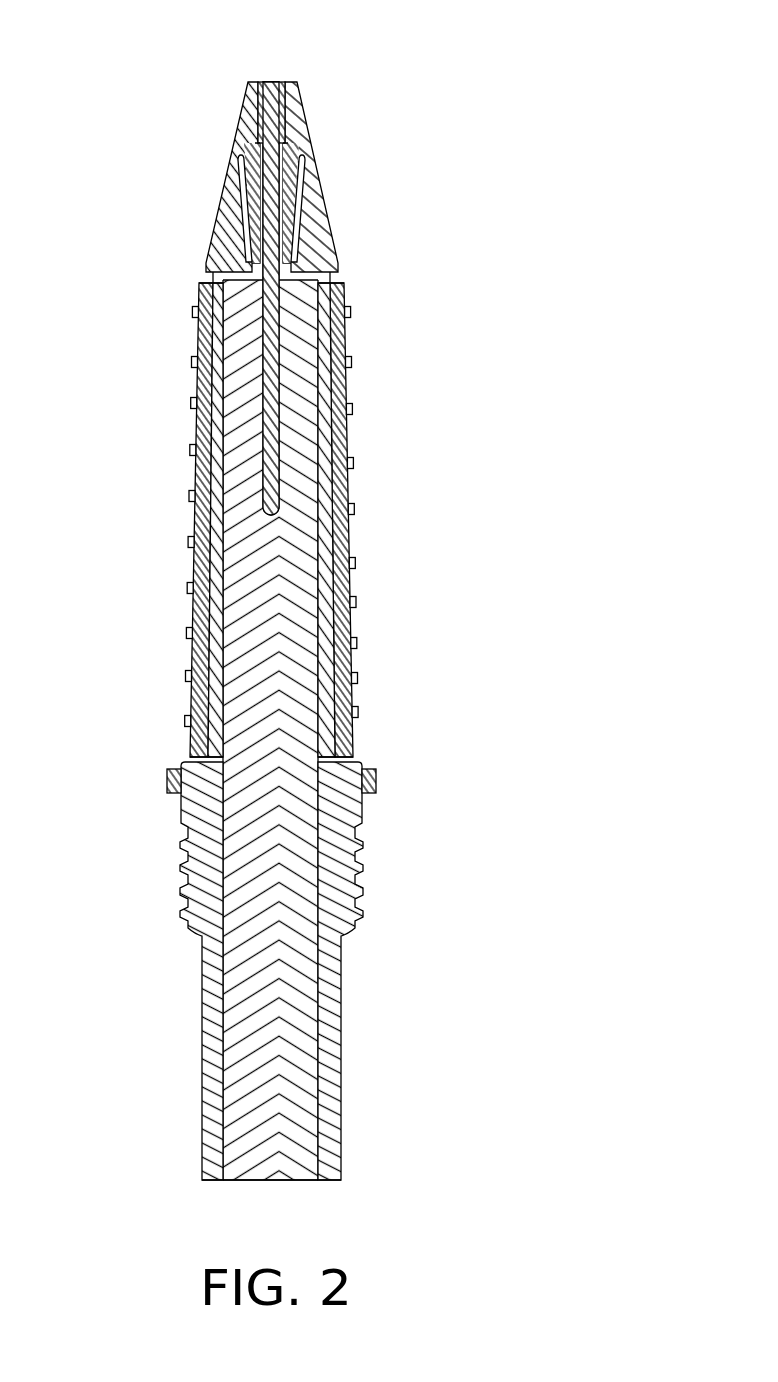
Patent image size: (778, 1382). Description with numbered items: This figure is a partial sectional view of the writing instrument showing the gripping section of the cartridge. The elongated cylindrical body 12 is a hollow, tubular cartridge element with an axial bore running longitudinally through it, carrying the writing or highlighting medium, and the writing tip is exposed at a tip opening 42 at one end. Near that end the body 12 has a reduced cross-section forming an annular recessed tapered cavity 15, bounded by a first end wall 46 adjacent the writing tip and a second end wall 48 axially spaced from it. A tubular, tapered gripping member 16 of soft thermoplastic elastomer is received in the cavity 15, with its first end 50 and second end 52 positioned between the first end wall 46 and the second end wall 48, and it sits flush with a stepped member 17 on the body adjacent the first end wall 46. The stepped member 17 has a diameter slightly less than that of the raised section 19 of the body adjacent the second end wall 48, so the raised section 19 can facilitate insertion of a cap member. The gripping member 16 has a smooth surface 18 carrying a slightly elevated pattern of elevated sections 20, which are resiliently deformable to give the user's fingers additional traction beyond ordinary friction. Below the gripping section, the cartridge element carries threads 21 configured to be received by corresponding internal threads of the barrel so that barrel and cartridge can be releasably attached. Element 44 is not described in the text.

The elongated cylindrical body 12 is at (323, 605).
The annular recessed tapered cavity 15 is at (347, 380).
The gripping member 16 is at (350, 536).
The stepped member 17 is at (349, 330).
The smooth surface 18 is at (347, 488).
The raised section 19 is at (353, 750).
The elevated sections 20 is at (187, 542).
The threads 21 is at (180, 893).
The tip opening 42 is at (287, 82).
The core side wall 44 is at (313, 673).
The first end wall 46 is at (192, 313).
The second end wall 48 is at (181, 762).
The first end 50 is at (191, 360).
The second end 52 is at (190, 746).